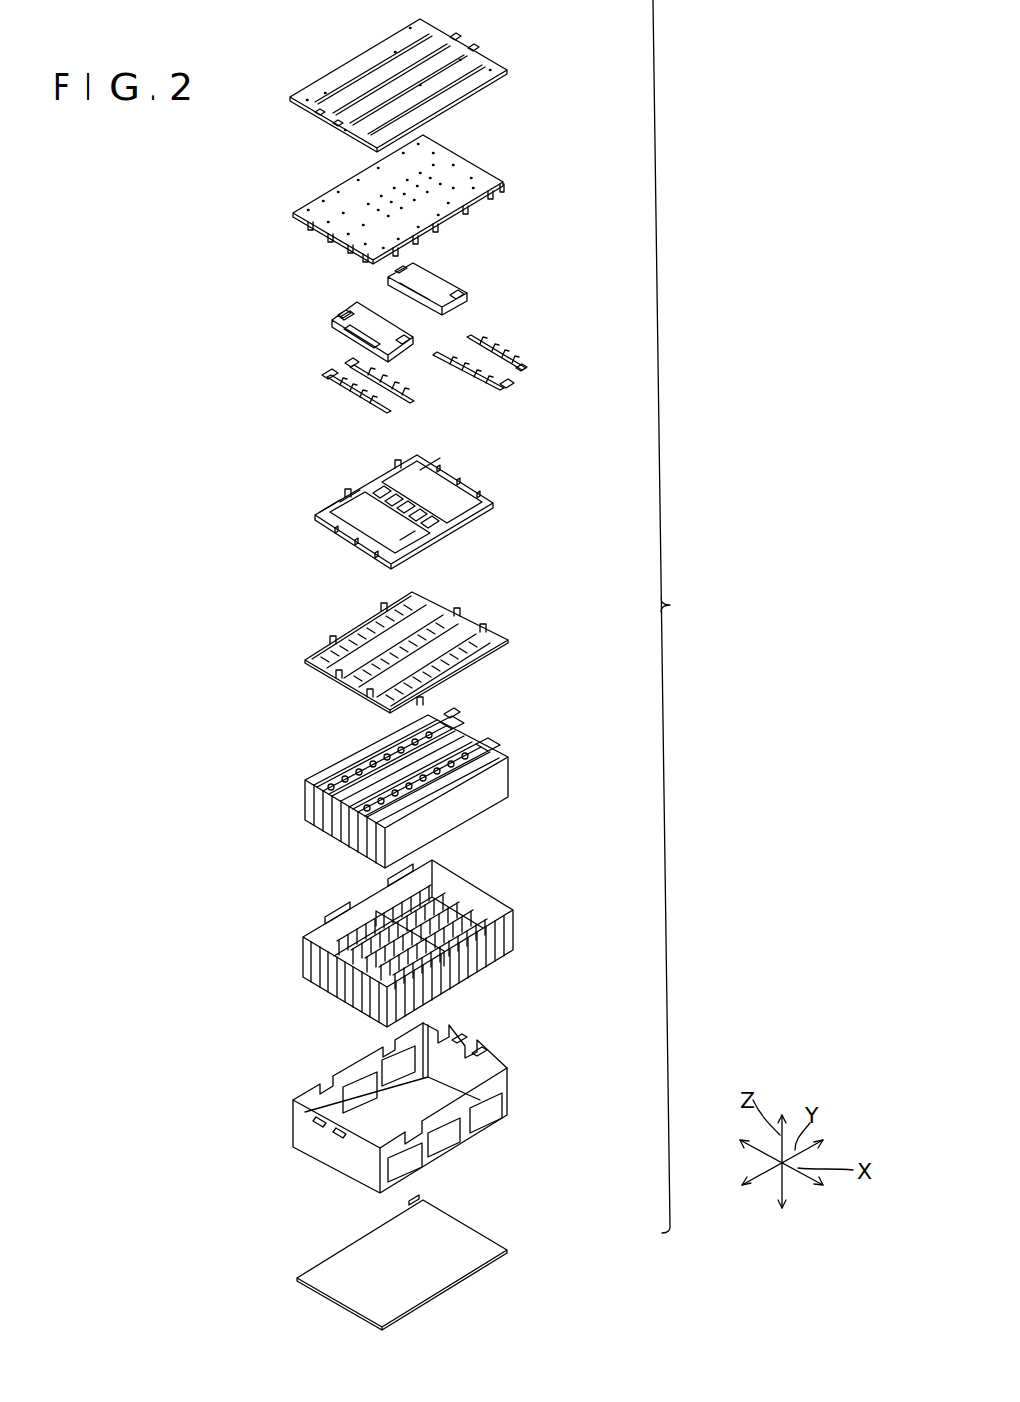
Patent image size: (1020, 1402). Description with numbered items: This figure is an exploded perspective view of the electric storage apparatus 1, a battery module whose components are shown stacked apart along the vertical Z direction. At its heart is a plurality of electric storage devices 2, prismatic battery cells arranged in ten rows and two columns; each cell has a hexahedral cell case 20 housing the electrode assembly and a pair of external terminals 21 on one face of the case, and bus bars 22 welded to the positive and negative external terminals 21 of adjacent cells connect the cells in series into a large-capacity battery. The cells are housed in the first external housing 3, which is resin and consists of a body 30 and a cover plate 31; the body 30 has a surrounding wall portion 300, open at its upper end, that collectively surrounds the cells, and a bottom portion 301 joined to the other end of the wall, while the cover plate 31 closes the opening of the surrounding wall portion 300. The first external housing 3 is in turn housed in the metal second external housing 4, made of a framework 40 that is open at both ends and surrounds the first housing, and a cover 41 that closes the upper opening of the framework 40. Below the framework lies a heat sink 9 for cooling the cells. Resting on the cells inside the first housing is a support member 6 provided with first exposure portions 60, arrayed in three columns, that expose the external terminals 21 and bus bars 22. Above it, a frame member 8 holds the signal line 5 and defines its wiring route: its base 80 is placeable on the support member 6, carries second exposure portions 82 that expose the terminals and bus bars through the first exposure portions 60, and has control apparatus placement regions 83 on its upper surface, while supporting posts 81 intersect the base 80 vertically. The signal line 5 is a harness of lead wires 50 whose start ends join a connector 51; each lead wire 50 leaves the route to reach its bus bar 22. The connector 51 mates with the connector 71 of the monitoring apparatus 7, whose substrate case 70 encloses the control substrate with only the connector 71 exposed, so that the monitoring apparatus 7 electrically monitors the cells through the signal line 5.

The electric storage apparatus 1 is at (673, 616).
The electric storage device 2 is at (430, 772).
The cell case 20 is at (318, 784).
The external terminal 21 is at (380, 767).
The bus bar 22 is at (313, 826).
The first external housing 3 is at (468, 199).
The body 30 is at (442, 937).
The cover plate 31 is at (529, 194).
The surrounding wall portion 300 is at (303, 958).
The bottom portion 301 is at (450, 902).
The second external housing 4 is at (467, 85).
The framework 40 is at (528, 1093).
The cover 41 is at (523, 63).
The signal line 5 is at (453, 389).
The lead wire 50 is at (370, 413).
The connector 51 is at (335, 372).
The support member 6 is at (429, 631).
The first exposure portion 60 is at (307, 662).
The monitoring apparatus 7 is at (445, 311).
The substrate case 70 is at (357, 323).
The connector 71 is at (347, 317).
The frame member 8 is at (436, 498).
The base 80 is at (318, 512).
The supporting post 81 is at (447, 519).
The second exposure portion 82 is at (397, 480).
The control apparatus placement region 83 is at (375, 527).
The heat sink 9 is at (462, 1237).